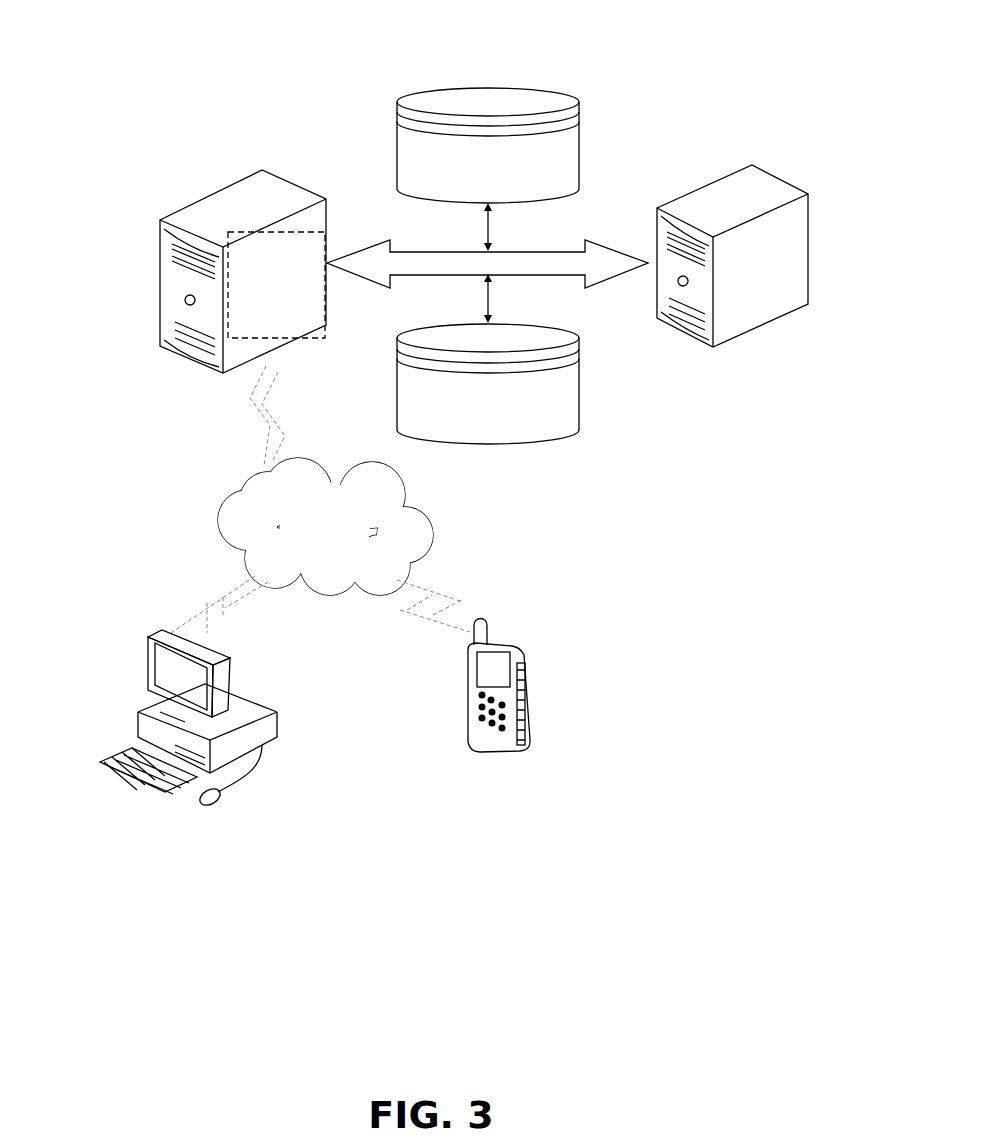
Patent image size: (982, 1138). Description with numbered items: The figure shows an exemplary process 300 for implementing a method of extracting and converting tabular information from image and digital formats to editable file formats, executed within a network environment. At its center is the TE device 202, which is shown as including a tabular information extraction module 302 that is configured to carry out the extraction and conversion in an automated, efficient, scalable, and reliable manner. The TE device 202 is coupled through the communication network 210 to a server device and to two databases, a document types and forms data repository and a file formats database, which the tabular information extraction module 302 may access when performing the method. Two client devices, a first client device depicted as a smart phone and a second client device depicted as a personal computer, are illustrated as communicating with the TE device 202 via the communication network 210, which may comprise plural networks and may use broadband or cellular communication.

The process 300 is at (163, 83).
The TE device 202 is at (180, 210).
The tabular information extraction module 302 is at (276, 285).
The communication network 210 is at (433, 399).